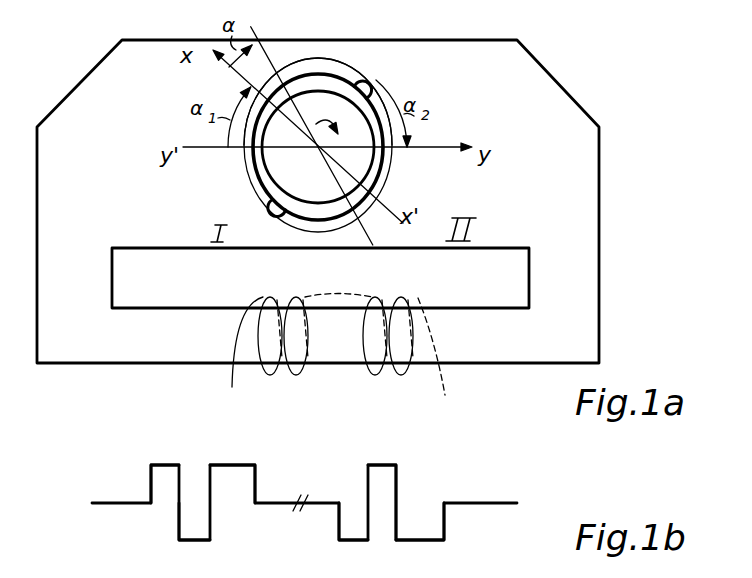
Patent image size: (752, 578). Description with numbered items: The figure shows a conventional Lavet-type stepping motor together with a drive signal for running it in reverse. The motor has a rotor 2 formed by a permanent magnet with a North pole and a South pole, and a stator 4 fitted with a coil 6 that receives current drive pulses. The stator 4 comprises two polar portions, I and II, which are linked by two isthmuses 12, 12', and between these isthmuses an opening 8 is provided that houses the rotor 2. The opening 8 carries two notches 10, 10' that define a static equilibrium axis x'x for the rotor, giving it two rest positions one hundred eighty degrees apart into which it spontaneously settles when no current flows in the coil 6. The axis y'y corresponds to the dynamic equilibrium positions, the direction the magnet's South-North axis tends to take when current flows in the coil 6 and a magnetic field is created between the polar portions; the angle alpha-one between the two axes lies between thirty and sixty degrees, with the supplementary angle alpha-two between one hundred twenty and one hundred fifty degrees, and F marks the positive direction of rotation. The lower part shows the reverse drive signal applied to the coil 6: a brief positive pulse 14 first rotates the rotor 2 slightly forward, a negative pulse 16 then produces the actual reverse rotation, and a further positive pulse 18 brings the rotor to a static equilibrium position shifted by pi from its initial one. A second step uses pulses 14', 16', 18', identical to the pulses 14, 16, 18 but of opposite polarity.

In FIG. 1A, the rotor 2 is at (360, 163).
In FIG. 1A, the stator 4 is at (88, 103).
In FIG. 1A, the coil 6 is at (445, 367).
In FIG. 1A, the opening 8 is at (307, 222).
In FIG. 1A, the notch 10 is at (360, 140).
In FIG. 1A, the notch 10' is at (237, 208).
In FIG. 1A, the isthmus 12 is at (318, 169).
In FIG. 1A, the isthmus 12' is at (344, 73).
In FIG. 1B, the positive pulse 14 is at (137, 478).
In FIG. 1B, the positive pulse of opposite polarity 14' is at (327, 528).
In FIG. 1B, the negative pulse 16 is at (220, 529).
In FIG. 1B, the negative pulse of opposite polarity 16' is at (415, 496).
In FIG. 1B, the positive pulse 18 is at (261, 478).
In FIG. 1B, the positive pulse of opposite polarity 18' is at (450, 528).